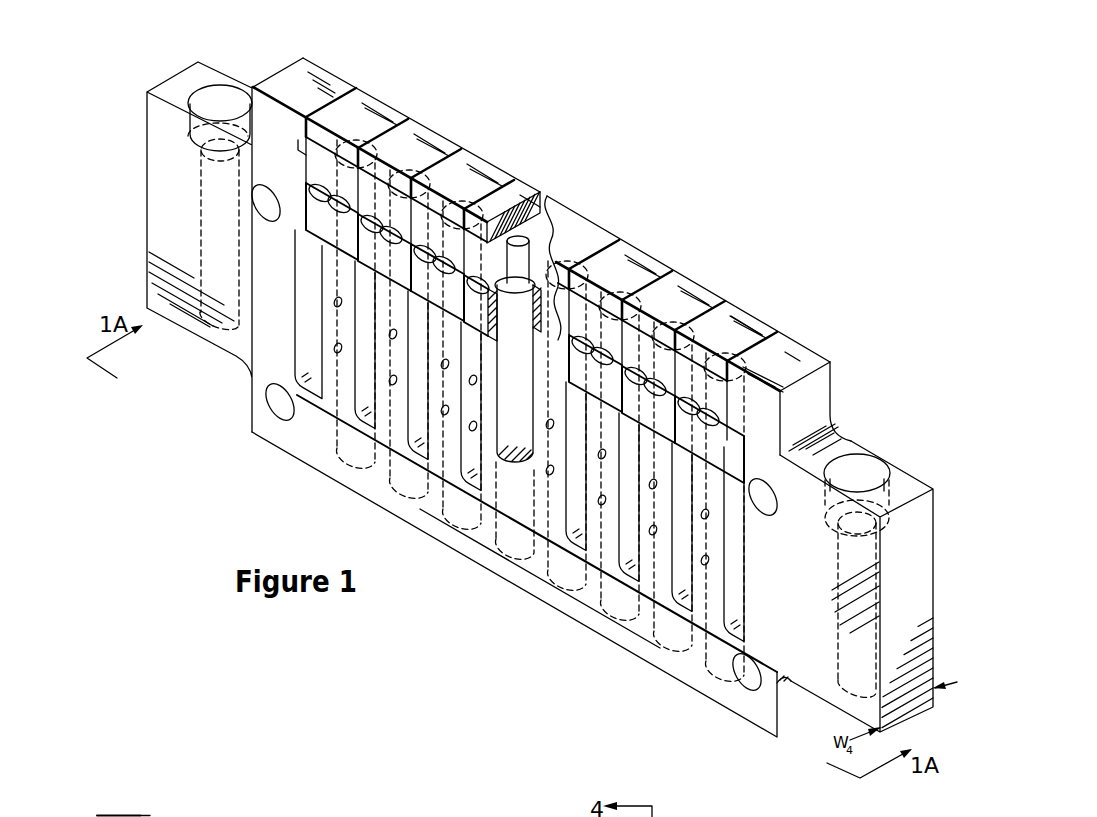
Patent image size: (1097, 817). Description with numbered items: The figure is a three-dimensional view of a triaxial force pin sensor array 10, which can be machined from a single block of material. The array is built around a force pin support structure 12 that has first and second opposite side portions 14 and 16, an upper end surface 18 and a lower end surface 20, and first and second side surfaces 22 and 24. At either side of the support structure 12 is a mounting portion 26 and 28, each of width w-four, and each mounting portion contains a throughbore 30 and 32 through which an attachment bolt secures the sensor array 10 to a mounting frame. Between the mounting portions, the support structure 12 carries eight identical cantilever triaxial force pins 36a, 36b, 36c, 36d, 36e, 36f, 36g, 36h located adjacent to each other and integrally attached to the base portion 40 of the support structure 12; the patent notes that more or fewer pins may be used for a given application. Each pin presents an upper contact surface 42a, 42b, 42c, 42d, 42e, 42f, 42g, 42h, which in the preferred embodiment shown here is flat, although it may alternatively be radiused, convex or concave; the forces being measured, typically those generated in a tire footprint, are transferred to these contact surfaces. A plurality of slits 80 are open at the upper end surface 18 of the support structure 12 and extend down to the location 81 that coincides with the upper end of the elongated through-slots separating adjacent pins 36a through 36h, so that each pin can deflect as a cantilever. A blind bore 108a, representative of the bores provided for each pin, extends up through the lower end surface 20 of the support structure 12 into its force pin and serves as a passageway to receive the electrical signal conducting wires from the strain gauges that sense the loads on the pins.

The triaxial force pin sensor array 10 is at (730, 135).
The force pin support structure 12 is at (595, 607).
The first side portion 14 is at (797, 487).
The second side portion 16 is at (340, 103).
The upper end surface 18 is at (312, 88).
The lower end surface 20 is at (791, 731).
The first side surface 22 is at (907, 613).
The second side surface 24 is at (147, 142).
The mounting portion 26 is at (818, 662).
The mounting portion 28 is at (158, 108).
The throughbore 30 is at (873, 572).
The throughbore 32 is at (200, 220).
The cantilever triaxial force pin 36a is at (736, 318).
The cantilever triaxial force pin 36b is at (683, 288).
The cantilever triaxial force pin 36c is at (630, 258).
The cantilever triaxial force pin 36d is at (578, 225).
The cantilever triaxial force pin 36e is at (527, 197).
The cantilever triaxial force pin 36f is at (474, 166).
The cantilever triaxial force pin 36g is at (421, 136).
The cantilever triaxial force pin 36h is at (369, 105).
The base portion 40 is at (445, 527).
The upper contact surface 42a is at (755, 332).
The upper contact surface 42b is at (702, 301).
The upper contact surface 42c is at (650, 271).
The upper contact surface 42d is at (593, 250).
The upper contact surface 42e is at (545, 209).
The upper contact surface 42f is at (506, 180).
The upper contact surface 42g is at (453, 150).
The upper contact surface 42h is at (400, 119).
The slits 80 is at (393, 273).
The location 81 is at (580, 360).
The blind bore 108a is at (743, 537).